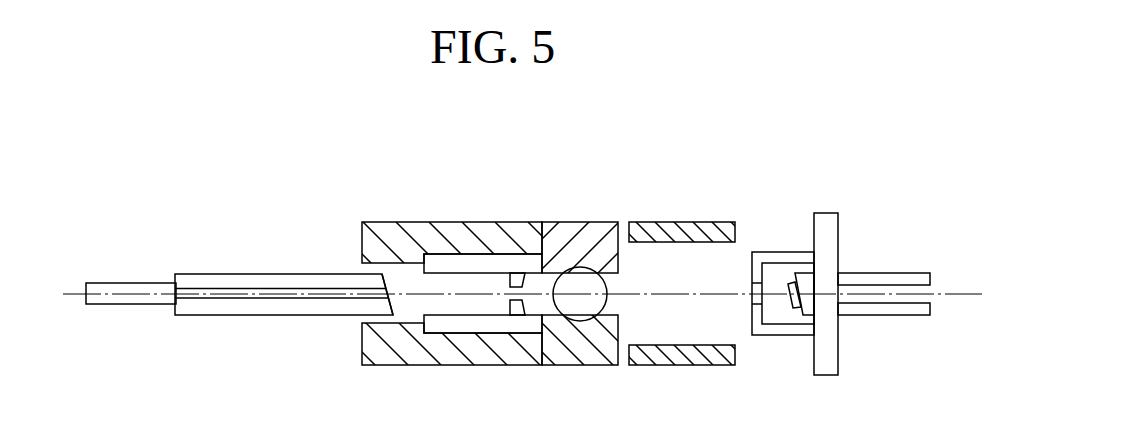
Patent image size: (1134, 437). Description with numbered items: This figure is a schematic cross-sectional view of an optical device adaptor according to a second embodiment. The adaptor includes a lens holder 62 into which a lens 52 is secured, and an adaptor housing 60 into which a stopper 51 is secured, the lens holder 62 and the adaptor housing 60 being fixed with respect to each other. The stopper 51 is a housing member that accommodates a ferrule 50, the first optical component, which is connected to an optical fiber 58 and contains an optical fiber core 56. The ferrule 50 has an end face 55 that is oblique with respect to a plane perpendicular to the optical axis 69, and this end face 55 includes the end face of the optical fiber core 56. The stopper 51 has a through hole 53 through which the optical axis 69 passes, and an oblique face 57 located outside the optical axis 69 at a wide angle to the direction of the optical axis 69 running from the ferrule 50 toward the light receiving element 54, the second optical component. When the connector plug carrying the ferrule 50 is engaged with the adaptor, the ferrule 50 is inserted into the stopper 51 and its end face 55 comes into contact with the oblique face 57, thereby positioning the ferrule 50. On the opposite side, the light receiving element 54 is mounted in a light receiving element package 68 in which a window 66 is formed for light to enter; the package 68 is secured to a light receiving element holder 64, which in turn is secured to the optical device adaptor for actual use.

The ferrule 50 is at (256, 280).
The stopper 51 is at (454, 262).
The lens 52 is at (577, 275).
The through hole 53 is at (516, 297).
The light receiving element 54 is at (790, 283).
The end face 55 is at (383, 274).
The optical fiber core 56 is at (188, 290).
The oblique face 57 is at (507, 282).
The optical fiber 58 is at (117, 288).
The adaptor housing 60 is at (422, 225).
The lens holder 62 is at (598, 358).
The light receiving element holder 64 is at (668, 230).
The window 66 is at (748, 290).
The light receiving element package 68 is at (828, 217).
The optical axis 69 is at (957, 294).